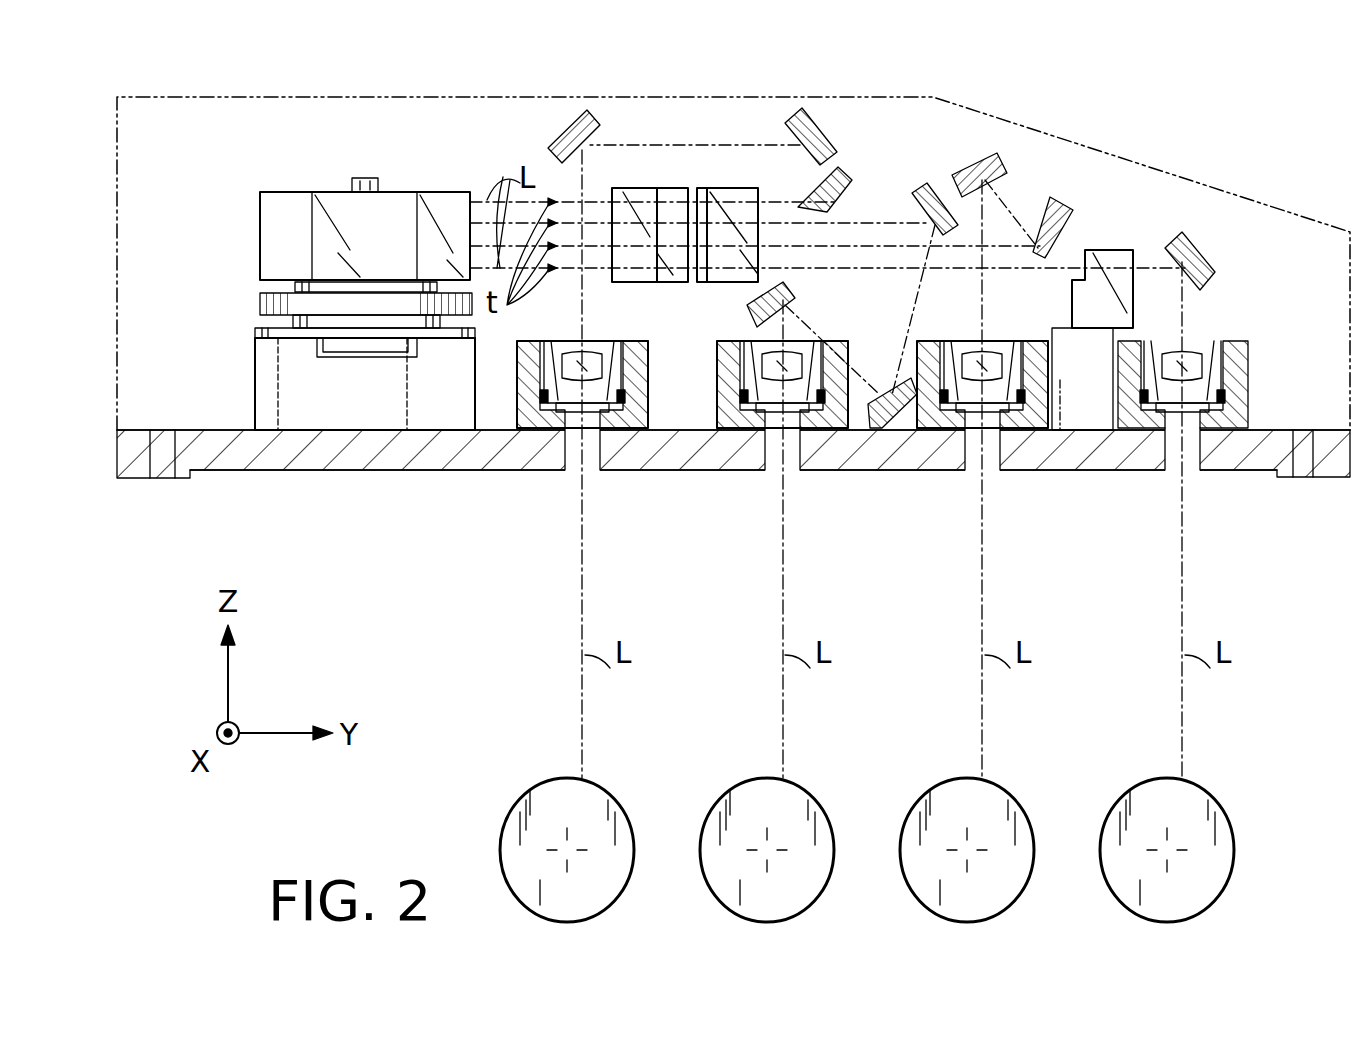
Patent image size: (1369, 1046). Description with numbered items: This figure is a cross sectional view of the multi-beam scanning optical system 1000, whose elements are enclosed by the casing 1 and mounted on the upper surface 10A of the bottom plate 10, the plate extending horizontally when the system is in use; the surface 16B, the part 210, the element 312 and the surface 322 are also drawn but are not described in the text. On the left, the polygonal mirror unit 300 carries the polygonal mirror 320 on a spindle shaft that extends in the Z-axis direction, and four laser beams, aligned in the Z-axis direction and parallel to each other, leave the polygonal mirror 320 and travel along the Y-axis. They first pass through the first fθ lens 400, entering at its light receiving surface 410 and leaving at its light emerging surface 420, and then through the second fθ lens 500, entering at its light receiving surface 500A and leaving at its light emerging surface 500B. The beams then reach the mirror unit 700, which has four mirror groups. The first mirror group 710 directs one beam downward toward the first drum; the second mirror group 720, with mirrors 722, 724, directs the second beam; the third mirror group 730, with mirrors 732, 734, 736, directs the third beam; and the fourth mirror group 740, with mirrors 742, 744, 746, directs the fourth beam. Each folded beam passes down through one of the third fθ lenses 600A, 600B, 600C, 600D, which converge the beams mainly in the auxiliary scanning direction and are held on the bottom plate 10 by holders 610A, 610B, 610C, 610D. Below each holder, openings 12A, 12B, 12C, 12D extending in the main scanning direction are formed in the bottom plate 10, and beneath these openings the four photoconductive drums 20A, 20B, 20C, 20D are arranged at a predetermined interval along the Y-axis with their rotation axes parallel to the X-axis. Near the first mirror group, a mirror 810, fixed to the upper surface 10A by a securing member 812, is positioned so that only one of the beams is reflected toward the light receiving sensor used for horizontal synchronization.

The casing 1 is at (1175, 178).
The multi-beam scanning optical system 1000 is at (1058, 90).
The mirror unit 700 is at (950, 94).
The bottom plate 10 is at (240, 455).
The upper surface 10A is at (215, 429).
The bottom surface of base plate 16B is at (300, 471).
The opening 12A is at (1199, 471).
The opening 12B is at (999, 471).
The opening 12C is at (799, 471).
The opening 12D is at (599, 471).
The polygonal mirror unit 300 is at (310, 221).
The polygonal mirror 320 is at (298, 187).
The reflecting surface 322 is at (437, 195).
The light emitting element 312 is at (362, 178).
The light source support 210 is at (362, 405).
The first fθ lens 400 is at (641, 188).
The light receiving surface 410 is at (612, 255).
The light emerging surface 420 is at (685, 215).
The second fθ lens 500 is at (733, 188).
The light receiving surface 500A is at (699, 255).
The light emerging surface 500B is at (768, 212).
The fourth mirror group 740 is at (703, 139).
The mirror 742 is at (842, 205).
The mirror 744 is at (791, 128).
The mirror 746 is at (550, 136).
The third mirror group 730 is at (862, 271).
The mirror 732 is at (928, 190).
The mirror 734 is at (870, 382).
The mirror 736 is at (796, 301).
The second mirror group 720 is at (1048, 161).
The mirror 722 is at (1074, 204).
The mirror 724 is at (1005, 172).
The mirror 810 is at (1090, 258).
The securing member 812 is at (1070, 352).
The first mirror group 710 is at (1208, 265).
The third fθ lens 600A is at (1222, 449).
The third fθ lens 600B is at (1012, 449).
The third fθ lens 600C is at (811, 447).
The third fθ lens 600D is at (611, 447).
The holder 610A is at (1250, 383).
The holder 610B is at (1046, 432).
The holder 610C is at (848, 432).
The holder 610D is at (648, 432).
The photoconductive drum 20A is at (1146, 800).
The photoconductive drum 20B is at (946, 800).
The photoconductive drum 20C is at (746, 800).
The photoconductive drum 20D is at (546, 800).